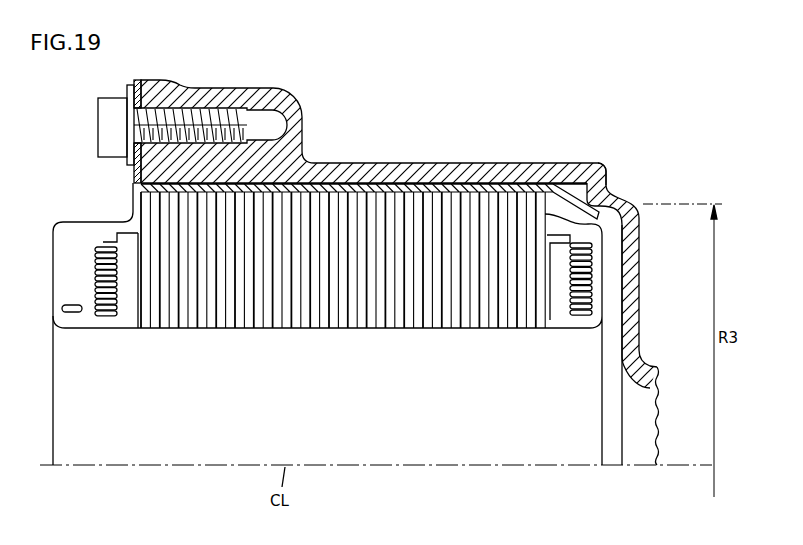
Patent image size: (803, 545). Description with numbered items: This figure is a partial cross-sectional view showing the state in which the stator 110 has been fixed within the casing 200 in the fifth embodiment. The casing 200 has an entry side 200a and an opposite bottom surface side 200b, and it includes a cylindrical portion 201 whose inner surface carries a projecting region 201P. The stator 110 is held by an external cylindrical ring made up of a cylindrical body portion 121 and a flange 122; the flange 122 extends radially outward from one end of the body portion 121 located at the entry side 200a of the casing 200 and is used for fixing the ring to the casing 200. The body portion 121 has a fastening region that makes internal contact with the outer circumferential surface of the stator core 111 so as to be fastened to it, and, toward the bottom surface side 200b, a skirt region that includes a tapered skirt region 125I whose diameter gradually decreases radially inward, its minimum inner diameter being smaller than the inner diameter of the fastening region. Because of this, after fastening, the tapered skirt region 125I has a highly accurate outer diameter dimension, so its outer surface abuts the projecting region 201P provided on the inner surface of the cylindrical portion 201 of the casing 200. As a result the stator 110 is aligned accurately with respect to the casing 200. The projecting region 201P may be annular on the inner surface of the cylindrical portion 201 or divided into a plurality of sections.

The casing 200 is at (266, 93).
The entry side 200a is at (142, 398).
The bottom surface side 200b is at (620, 266).
The cylindrical portion 201 is at (440, 174).
The projecting region 201P is at (597, 200).
The stator 110 is at (80, 187).
The stator core 111 is at (355, 313).
The cylindrical body portion 121 is at (372, 180).
The flange 122 is at (133, 178).
The tapered skirt region 125I is at (573, 203).